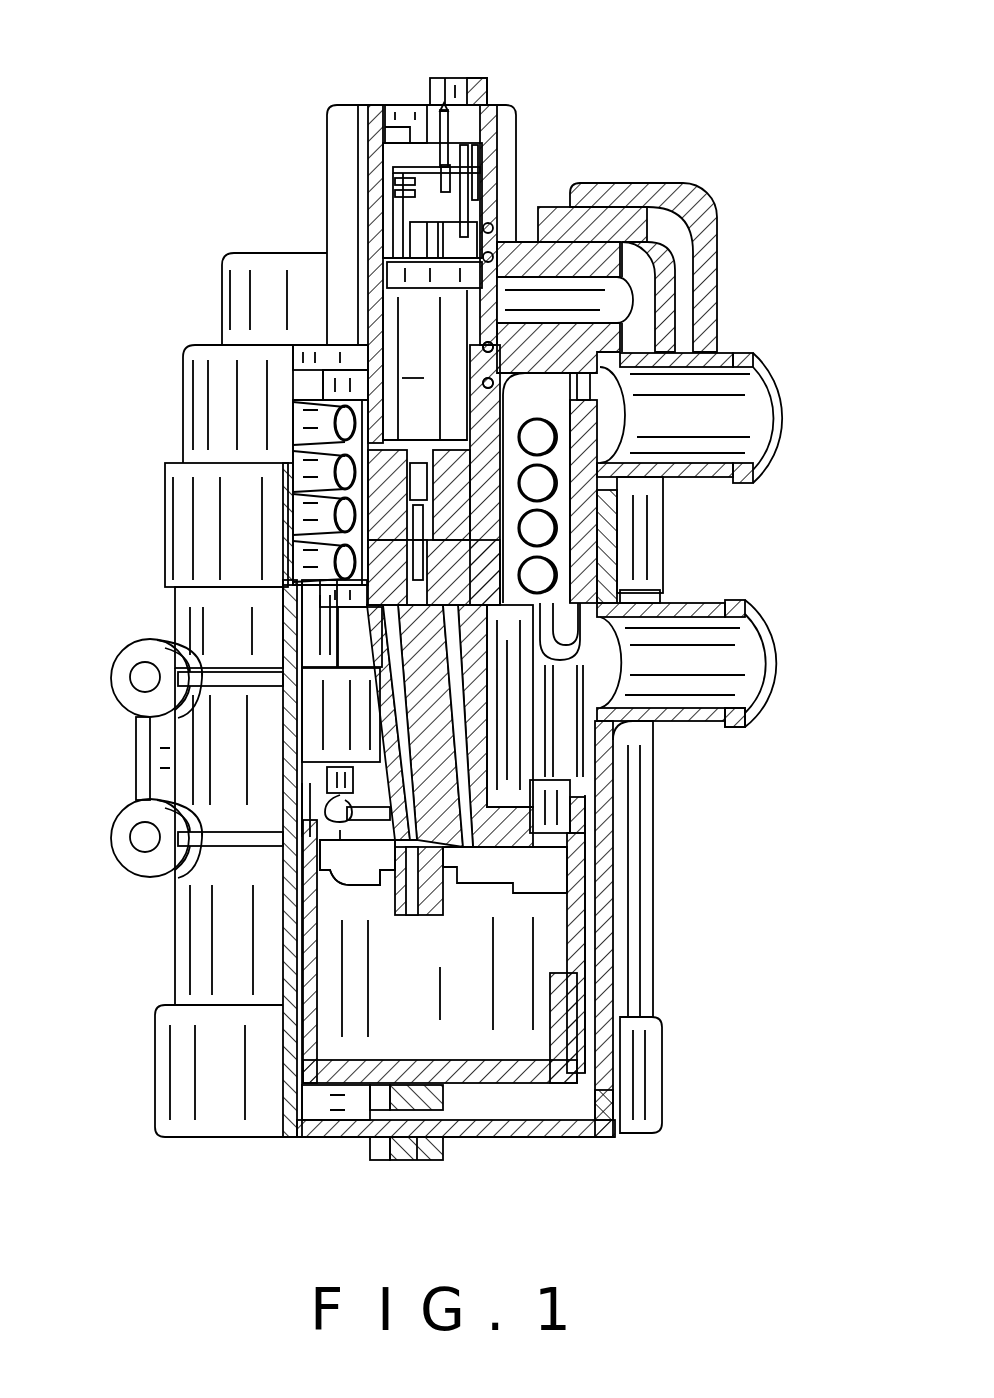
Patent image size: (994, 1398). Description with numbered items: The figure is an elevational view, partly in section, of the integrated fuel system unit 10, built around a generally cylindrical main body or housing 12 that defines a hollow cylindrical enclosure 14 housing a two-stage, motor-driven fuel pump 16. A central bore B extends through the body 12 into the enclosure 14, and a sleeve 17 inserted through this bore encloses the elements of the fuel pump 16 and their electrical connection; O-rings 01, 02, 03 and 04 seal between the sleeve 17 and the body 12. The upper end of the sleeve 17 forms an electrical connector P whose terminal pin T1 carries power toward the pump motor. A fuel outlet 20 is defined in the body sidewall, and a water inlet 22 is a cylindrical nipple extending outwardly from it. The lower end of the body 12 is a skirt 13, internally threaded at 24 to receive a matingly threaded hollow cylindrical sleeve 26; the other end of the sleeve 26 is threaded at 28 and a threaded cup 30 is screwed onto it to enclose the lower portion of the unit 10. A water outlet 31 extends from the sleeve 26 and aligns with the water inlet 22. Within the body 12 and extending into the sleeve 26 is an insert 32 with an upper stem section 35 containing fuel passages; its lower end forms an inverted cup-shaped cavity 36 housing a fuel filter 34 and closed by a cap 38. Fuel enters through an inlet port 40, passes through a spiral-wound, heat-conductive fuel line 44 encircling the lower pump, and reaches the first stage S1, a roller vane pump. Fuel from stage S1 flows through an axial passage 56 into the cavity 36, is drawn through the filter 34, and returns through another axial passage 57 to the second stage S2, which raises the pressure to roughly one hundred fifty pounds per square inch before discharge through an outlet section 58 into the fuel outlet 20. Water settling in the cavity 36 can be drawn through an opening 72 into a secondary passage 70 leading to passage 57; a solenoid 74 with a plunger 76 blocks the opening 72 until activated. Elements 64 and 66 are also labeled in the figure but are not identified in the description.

The integrated fuel system unit 10 is at (232, 98).
The main body or housing 12 is at (158, 452).
The skirt 13 is at (163, 512).
The outlet section 58 is at (330, 482).
The central bore B is at (368, 385).
The first stage S1 is at (330, 545).
The second stage S2 is at (330, 505).
The fuel pump 16 is at (392, 326).
The O-ring 01 is at (487, 345).
The O-ring 02 is at (487, 380).
The O-ring 03 is at (491, 237).
The O-ring 04 is at (625, 240).
The terminal pin T1 is at (440, 118).
The electrical connector P is at (477, 80).
The fuel outlet 20 is at (640, 235).
The inlet port 40 is at (633, 303).
The enclosure 14 is at (637, 352).
The sleeve 17 is at (585, 400).
The water inlet 22 is at (787, 430).
The spiral wound fuel line 44 is at (568, 476).
The internal threads 24 is at (565, 455).
The inlet passage 64 is at (640, 640).
The axial passage 56 is at (627, 670).
The water outlet 31 is at (753, 717).
The upper stem section 35 is at (453, 688).
The insert 32 is at (482, 760).
The check valve 66 is at (578, 792).
The sleeve 26 is at (662, 908).
The axial passage 57 is at (380, 880).
The cup 30 is at (662, 1097).
The threads 28 is at (617, 1107).
The cap 38 is at (343, 1083).
The fuel filter 34 is at (383, 985).
The cavity 36 is at (512, 885).
The opening 72 is at (330, 855).
The passage 70 is at (352, 772).
The solenoid 74 is at (348, 652).
The plunger 76 is at (340, 818).